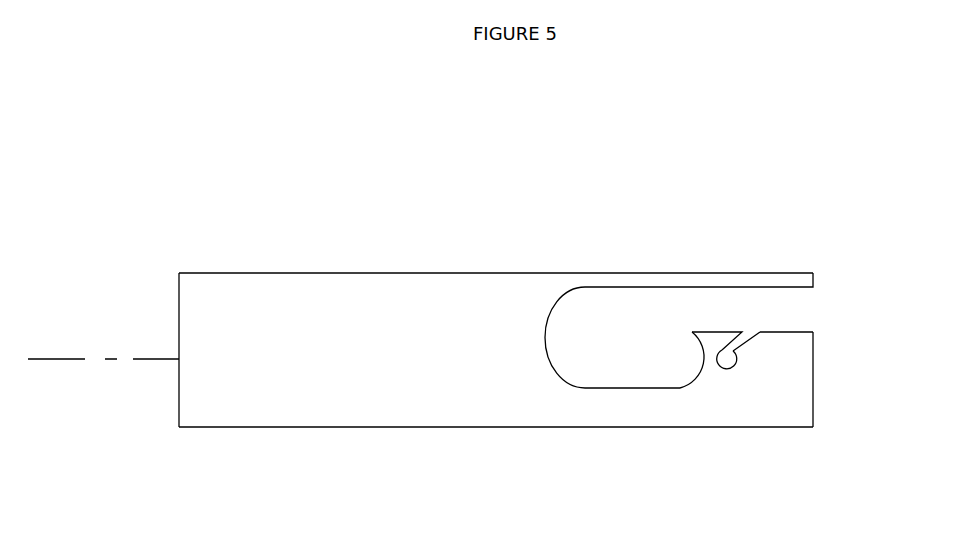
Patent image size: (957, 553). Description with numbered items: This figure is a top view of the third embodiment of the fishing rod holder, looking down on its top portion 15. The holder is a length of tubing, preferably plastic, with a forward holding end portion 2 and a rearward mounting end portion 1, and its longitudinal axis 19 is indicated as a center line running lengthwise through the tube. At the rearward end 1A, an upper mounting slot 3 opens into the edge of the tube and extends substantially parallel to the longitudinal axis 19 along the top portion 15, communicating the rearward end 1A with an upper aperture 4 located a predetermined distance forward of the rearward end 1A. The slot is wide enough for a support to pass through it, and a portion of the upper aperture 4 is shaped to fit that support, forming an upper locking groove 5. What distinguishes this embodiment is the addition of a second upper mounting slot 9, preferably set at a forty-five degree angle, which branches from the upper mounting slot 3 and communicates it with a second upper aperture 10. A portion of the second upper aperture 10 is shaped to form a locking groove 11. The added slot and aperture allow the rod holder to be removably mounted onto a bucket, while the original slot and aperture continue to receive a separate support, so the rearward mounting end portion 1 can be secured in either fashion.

The rearward mounting end portion 1 is at (756, 428).
The rearward end 1A is at (815, 398).
The forward holding end portion 2 is at (217, 272).
The upper mounting slot 3 is at (813, 307).
The upper aperture 4 is at (608, 337).
The upper locking groove 5 is at (702, 360).
The second upper mounting slot 9 is at (749, 327).
The second upper aperture 10 is at (727, 350).
The locking groove 11 is at (738, 360).
The top portion 15 is at (385, 410).
The longitudinal axis 19 is at (62, 359).